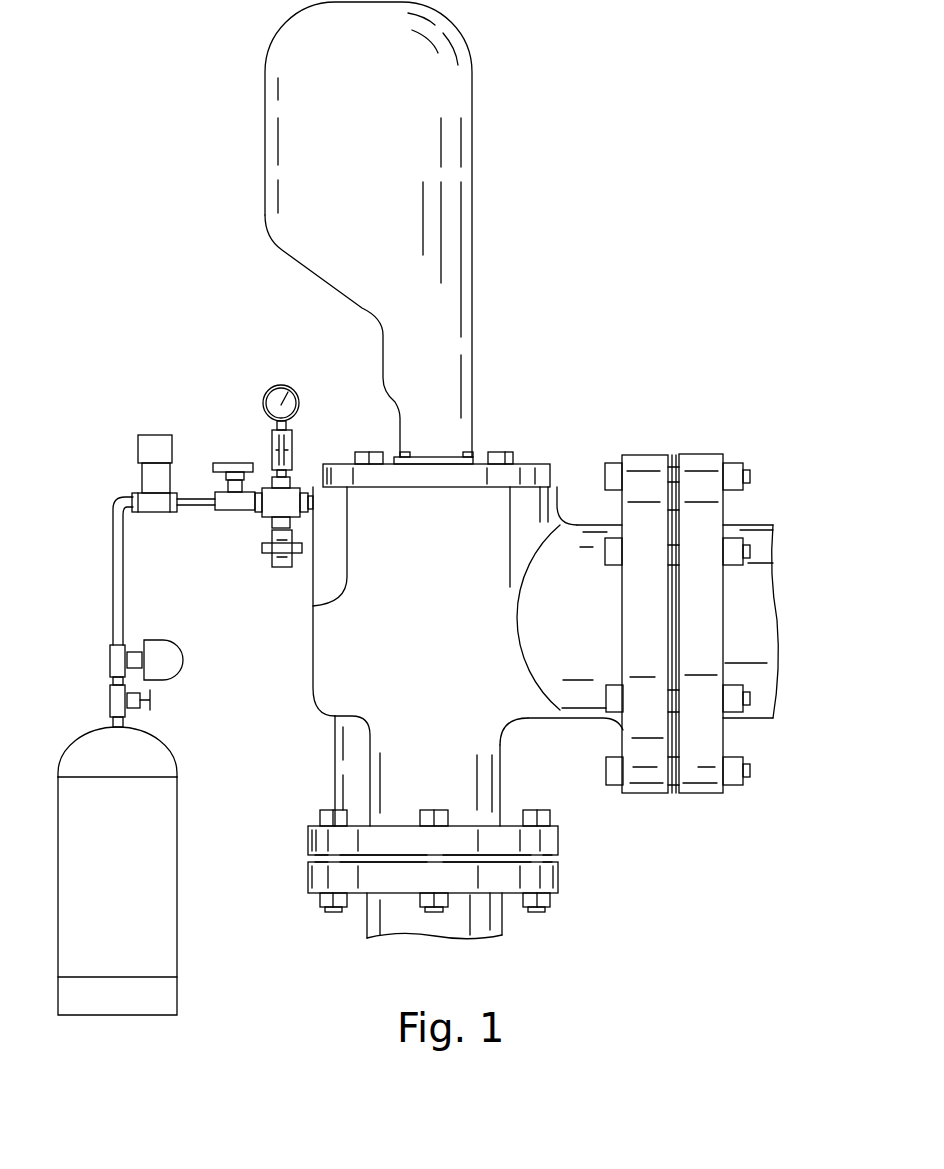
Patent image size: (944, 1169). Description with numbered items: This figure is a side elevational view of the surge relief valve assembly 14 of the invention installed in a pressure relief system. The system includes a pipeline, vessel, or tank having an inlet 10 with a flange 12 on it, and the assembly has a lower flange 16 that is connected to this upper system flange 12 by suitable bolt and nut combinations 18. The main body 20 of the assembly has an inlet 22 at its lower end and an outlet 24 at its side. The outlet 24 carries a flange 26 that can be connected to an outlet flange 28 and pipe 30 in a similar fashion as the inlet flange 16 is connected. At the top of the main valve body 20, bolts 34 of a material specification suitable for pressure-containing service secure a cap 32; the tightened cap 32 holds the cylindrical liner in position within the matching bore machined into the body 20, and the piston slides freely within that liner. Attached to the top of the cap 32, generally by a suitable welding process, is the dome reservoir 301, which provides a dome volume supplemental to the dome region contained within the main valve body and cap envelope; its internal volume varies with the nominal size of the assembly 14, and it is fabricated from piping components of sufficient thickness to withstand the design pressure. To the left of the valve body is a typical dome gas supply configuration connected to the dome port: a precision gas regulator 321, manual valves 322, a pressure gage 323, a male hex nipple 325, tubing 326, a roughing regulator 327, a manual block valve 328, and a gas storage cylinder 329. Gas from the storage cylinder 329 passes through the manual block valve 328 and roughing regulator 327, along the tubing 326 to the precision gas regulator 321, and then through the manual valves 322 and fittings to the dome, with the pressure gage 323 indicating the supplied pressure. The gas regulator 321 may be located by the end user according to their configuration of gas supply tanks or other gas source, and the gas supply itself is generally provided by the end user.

The inlet 10 is at (378, 923).
The flange 12 is at (322, 878).
The surge relief valve assembly 14 is at (555, 453).
The lower flange 16 is at (547, 835).
The bolt and nut combinations 18 is at (440, 817).
The main body 20 is at (432, 612).
The inlet 22 is at (492, 775).
The outlet 24 is at (582, 710).
The flange 26 is at (648, 465).
The outlet flange 28 is at (697, 465).
The pipe 30 is at (757, 535).
The cap 32 is at (433, 477).
The bolts 34 is at (510, 454).
The dome reservoir 301 is at (445, 235).
The precision gas regulator 321 is at (160, 447).
The manual valves 322 is at (232, 470).
The pressure gage 323 is at (275, 398).
The male hex nipple 325 is at (307, 487).
The tubing 326 is at (113, 503).
The roughing regulator 327 is at (168, 658).
The manual block valve 328 is at (153, 707).
The gas storage cylinder 329 is at (153, 850).